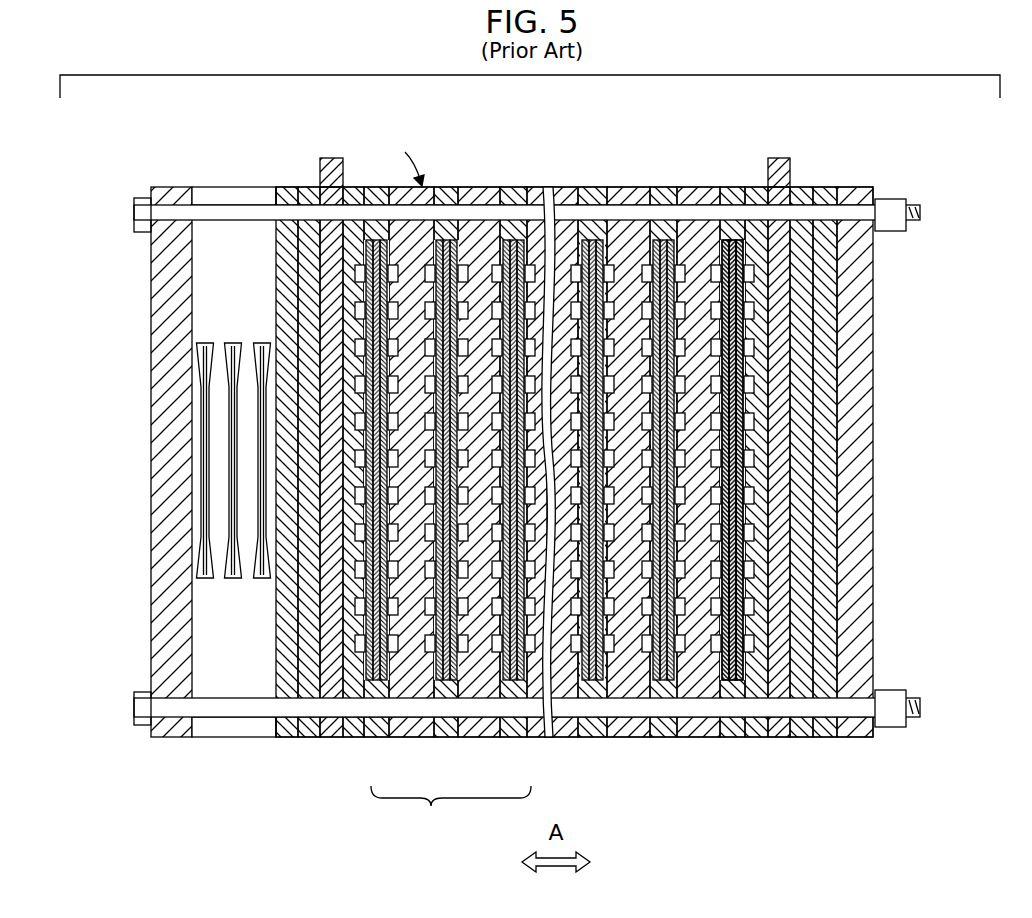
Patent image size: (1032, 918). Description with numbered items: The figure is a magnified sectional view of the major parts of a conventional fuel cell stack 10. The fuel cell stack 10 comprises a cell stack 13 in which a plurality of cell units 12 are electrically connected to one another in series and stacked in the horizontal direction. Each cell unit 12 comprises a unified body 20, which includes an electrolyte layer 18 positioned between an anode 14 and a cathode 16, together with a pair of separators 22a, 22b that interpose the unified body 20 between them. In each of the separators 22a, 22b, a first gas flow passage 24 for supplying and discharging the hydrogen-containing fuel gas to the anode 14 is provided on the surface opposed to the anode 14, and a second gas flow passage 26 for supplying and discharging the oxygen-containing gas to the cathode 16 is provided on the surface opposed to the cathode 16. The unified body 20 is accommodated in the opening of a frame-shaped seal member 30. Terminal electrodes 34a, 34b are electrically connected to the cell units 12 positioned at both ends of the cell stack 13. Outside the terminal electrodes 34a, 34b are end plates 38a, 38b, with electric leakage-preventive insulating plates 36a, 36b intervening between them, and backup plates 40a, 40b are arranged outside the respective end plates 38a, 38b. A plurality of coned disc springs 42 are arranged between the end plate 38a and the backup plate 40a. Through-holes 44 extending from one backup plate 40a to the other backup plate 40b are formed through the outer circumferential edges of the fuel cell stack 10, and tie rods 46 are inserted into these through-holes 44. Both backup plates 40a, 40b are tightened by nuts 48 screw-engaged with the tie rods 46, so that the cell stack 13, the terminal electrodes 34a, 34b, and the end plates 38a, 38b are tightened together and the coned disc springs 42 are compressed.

The fuel cell stack 10 is at (530, 100).
The cell unit 12 is at (451, 809).
The cell stack 13 is at (403, 157).
The anode 14 is at (733, 672).
The cathode 16 is at (726, 560).
The electrolyte layer 18 is at (741, 598).
The unified body 20 is at (433, 699).
The separator 22a is at (403, 735).
The separator 22b is at (497, 731).
The first gas flow passage 24 is at (430, 266).
The second gas flow passage 26 is at (333, 734).
The seal member 30 is at (598, 737).
The terminal electrode 34a is at (332, 170).
The terminal electrode 34b is at (779, 170).
The insulating plate 36a is at (298, 688).
The insulating plate 36b is at (809, 393).
The end plate 38a is at (286, 628).
The end plate 38b is at (827, 345).
The backup plate 40a is at (165, 547).
The backup plate 40b is at (868, 310).
The coned disc spring 42 is at (225, 462).
The through-hole 44 is at (620, 198).
The tie rod 46 is at (225, 212).
The nut 48 is at (893, 200).